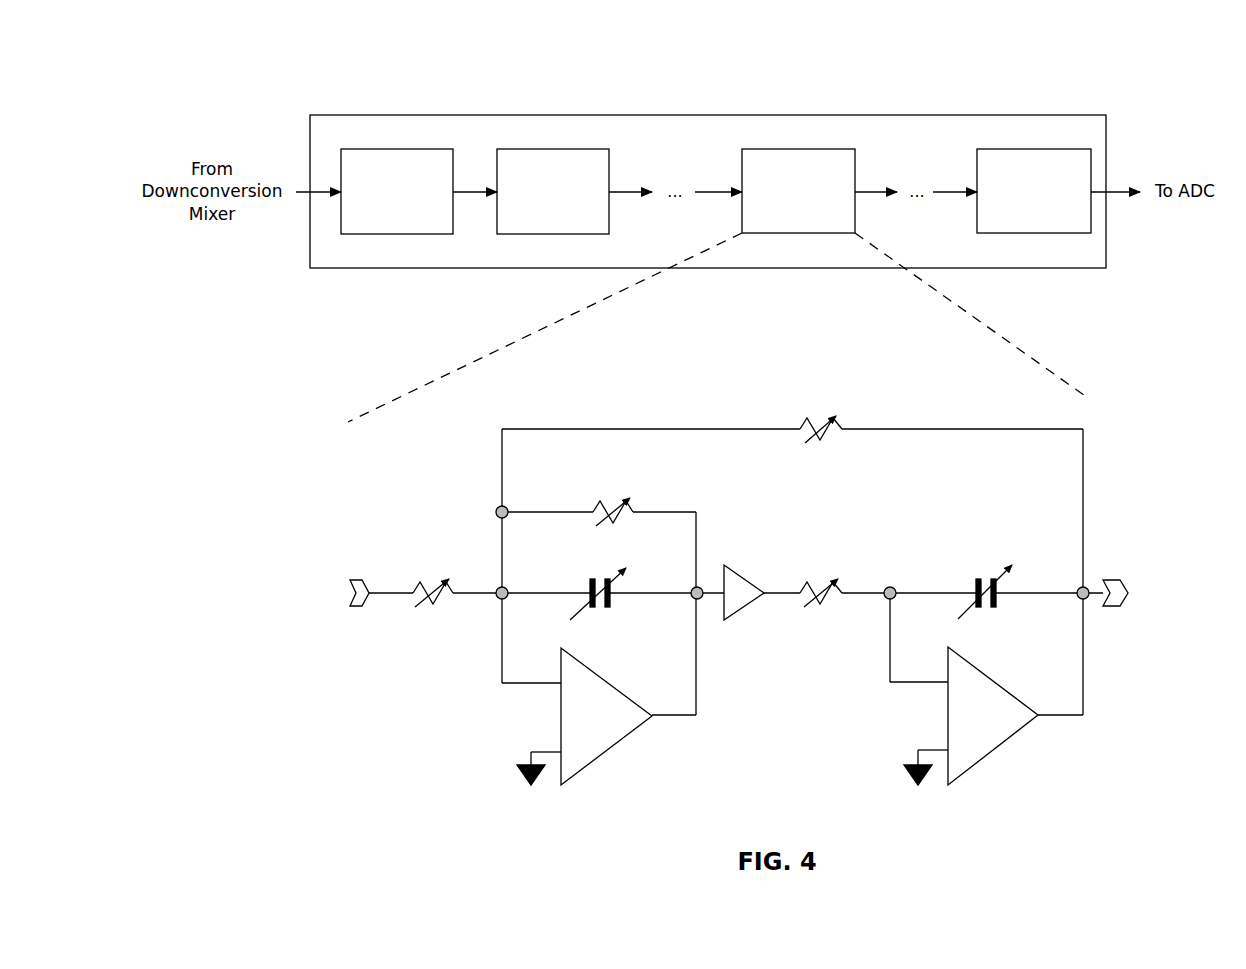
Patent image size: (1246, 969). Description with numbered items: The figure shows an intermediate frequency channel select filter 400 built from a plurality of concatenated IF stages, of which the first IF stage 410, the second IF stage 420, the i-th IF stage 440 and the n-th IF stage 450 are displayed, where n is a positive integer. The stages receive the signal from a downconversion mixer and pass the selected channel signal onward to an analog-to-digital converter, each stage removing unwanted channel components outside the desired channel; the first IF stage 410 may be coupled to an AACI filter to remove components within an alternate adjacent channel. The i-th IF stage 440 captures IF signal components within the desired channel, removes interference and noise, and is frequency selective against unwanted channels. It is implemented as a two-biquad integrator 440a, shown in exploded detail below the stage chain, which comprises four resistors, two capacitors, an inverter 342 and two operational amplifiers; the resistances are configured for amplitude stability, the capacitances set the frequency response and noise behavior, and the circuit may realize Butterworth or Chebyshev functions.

The IF channel select filter 400 is at (671, 115).
The IF stage_0 410 is at (383, 149).
The IF stage_1 420 is at (539, 149).
The IF stage_i 440 is at (775, 149).
The IF stage_n 450 is at (1011, 149).
The 2-biquad integrator 440a is at (1100, 416).
The inverter 342 is at (729, 571).